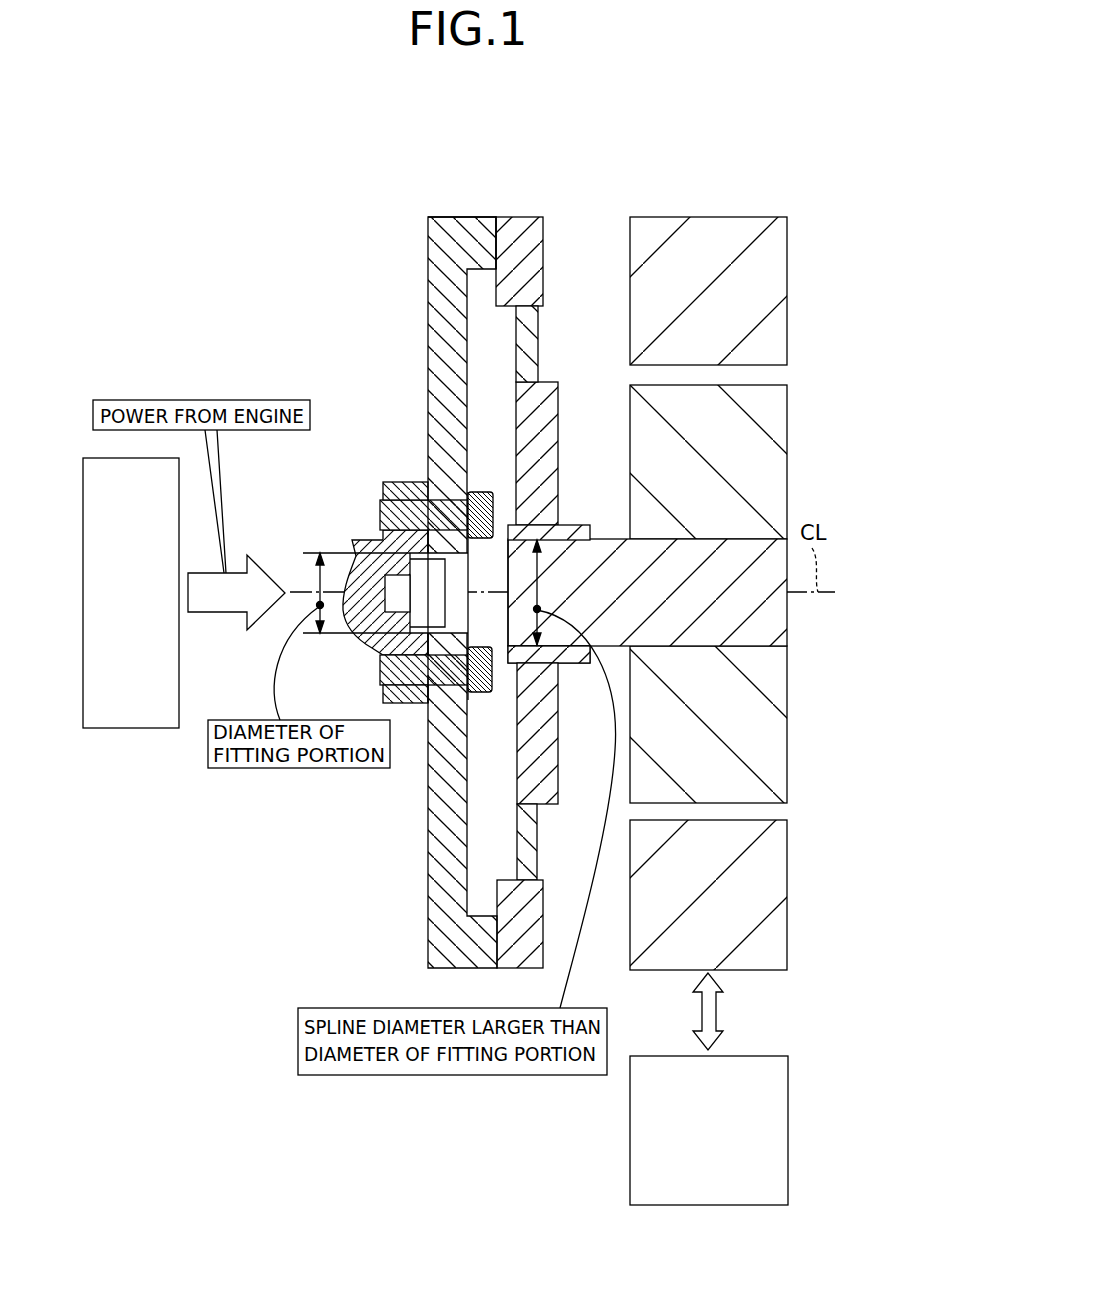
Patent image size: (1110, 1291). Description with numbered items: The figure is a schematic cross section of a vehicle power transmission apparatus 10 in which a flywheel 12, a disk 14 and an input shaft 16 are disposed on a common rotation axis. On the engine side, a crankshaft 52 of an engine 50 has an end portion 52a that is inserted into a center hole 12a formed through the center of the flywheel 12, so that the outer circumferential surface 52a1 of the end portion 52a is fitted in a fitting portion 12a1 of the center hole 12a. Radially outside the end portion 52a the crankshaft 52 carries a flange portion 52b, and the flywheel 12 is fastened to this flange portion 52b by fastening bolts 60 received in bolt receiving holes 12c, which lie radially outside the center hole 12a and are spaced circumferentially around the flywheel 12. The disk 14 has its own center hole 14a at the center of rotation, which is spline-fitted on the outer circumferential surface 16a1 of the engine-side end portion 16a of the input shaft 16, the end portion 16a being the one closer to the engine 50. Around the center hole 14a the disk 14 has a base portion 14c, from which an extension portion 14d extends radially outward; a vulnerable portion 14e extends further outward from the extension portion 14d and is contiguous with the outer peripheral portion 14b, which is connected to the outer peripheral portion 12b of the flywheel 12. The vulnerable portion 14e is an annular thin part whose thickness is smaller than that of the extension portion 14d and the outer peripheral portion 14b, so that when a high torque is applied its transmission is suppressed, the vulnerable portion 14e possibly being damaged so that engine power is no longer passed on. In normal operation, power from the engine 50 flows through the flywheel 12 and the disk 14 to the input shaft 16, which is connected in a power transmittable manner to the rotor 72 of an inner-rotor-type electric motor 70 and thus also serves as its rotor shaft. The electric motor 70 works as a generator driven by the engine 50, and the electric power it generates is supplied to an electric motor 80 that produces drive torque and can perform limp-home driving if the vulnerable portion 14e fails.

The vehicle power transmission apparatus 10 is at (631, 109).
The flywheel 12 is at (454, 194).
The center hole 12a is at (385, 596).
The fitting portion 12a1 is at (430, 688).
The outer peripheral portion 12b is at (478, 240).
The bolt receiving holes 12c is at (493, 508).
The disk 14 is at (523, 194).
The center hole 14a is at (520, 534).
The outer peripheral portion 14b is at (530, 272).
The base portion 14c is at (567, 653).
The extension portion 14d is at (547, 752).
The vulnerable portion 14e is at (535, 840).
The input shaft 16 is at (607, 519).
The engine-side end portion 16a is at (506, 632).
The outer circumferential surface 16a1 is at (550, 540).
The engine 50 is at (112, 718).
The crankshaft 52 is at (351, 506).
The end portion 52a is at (372, 538).
The outer circumferential surface 52a1 is at (430, 482).
The flange portion 52b is at (381, 695).
The fastening bolts 60 is at (481, 652).
The electric motor 70 is at (702, 194).
The rotor 72 is at (775, 435).
The electric motor 80 is at (645, 1128).